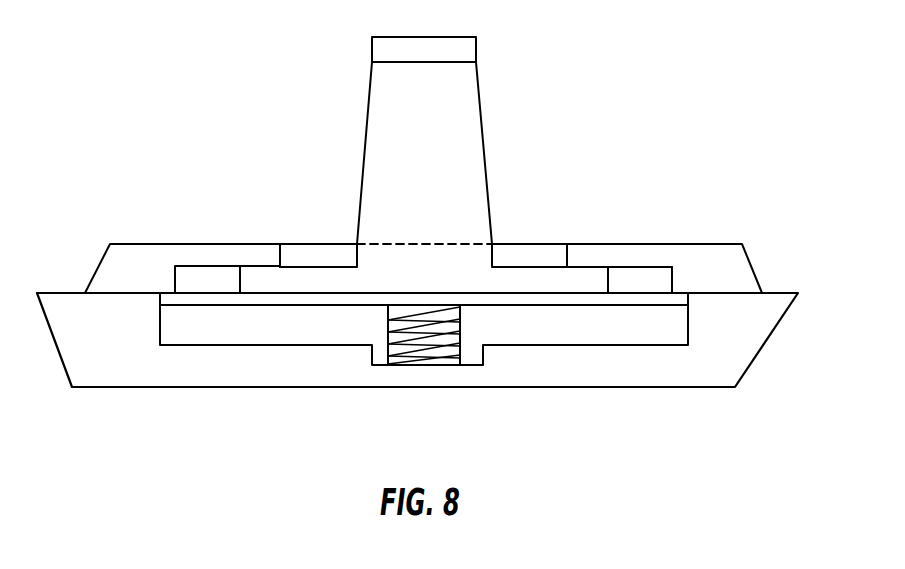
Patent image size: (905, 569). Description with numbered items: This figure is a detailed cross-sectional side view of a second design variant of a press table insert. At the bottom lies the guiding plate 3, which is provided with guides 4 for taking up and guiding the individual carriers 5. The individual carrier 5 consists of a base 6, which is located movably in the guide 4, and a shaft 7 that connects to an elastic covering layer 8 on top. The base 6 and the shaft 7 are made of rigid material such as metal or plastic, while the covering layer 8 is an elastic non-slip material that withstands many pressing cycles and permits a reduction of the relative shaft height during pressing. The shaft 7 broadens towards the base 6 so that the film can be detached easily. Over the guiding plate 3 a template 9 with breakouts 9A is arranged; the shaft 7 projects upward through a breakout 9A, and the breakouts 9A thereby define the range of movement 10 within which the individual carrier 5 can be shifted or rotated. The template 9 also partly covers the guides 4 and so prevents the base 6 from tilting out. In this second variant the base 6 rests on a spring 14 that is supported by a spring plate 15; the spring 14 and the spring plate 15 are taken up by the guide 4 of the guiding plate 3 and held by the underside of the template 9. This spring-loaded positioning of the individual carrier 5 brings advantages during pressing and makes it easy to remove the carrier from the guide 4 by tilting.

The guiding plate 3 is at (768, 307).
The guides 4 is at (657, 277).
The individual carrier 5 is at (363, 158).
The base 6 is at (325, 278).
The shaft 7 is at (378, 107).
The elastic covering layer 8 is at (448, 45).
The template 9 is at (628, 252).
The breakouts 9A is at (568, 245).
The range of movement 10 is at (508, 243).
The spring 14 is at (438, 315).
The spring plate 15 is at (650, 307).